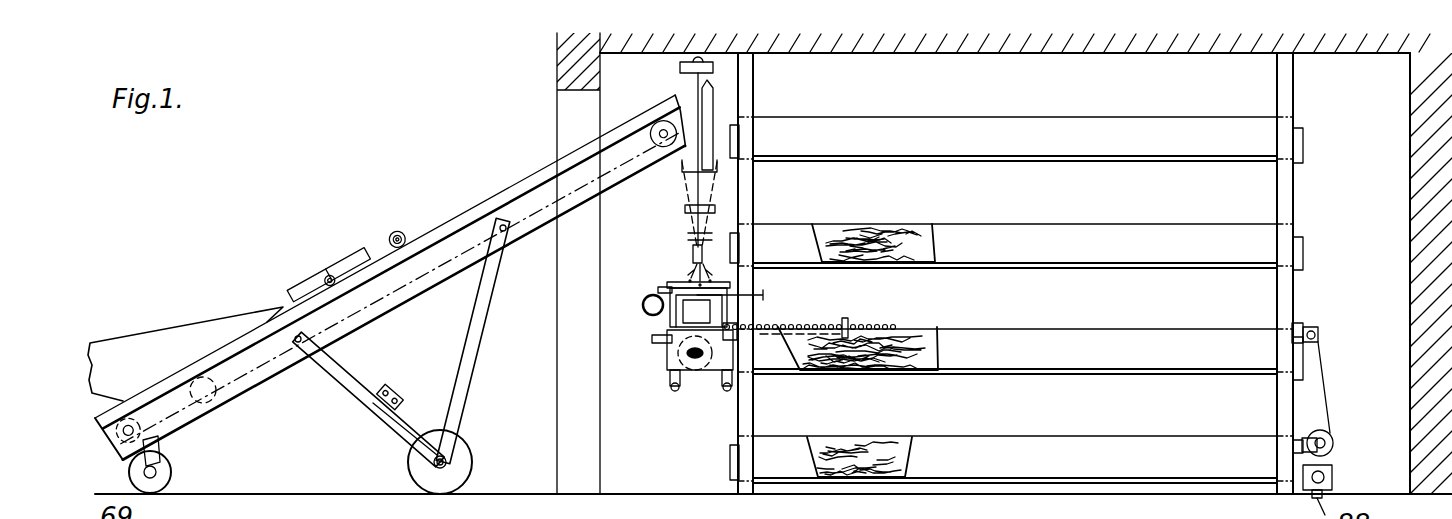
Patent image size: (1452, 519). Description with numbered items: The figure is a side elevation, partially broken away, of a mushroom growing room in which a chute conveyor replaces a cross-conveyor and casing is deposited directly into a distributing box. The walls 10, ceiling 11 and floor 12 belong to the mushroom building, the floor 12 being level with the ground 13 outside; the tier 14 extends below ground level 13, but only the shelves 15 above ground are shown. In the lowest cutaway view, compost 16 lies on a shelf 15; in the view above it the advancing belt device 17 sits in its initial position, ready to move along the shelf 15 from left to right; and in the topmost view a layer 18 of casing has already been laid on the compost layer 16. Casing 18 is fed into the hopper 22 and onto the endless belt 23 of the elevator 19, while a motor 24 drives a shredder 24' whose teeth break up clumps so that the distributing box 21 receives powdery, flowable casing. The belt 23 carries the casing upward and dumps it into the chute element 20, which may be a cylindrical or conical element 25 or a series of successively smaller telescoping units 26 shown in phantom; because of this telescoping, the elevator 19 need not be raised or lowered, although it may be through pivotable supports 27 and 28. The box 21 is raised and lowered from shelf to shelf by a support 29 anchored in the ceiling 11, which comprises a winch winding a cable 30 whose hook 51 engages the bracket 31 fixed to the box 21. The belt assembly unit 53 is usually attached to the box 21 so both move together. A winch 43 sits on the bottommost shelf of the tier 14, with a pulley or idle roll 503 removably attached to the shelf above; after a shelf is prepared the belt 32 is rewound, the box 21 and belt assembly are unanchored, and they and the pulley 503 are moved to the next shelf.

The walls 10 is at (570, 332).
The ceiling 11 is at (917, 53).
The floor 12 is at (665, 494).
The ground 13 is at (476, 494).
The tier 14 is at (730, 417).
The shelves 15 is at (772, 430).
The compost 16 is at (935, 250).
The advancing belt device 17 is at (857, 282).
The layer of casing 18 is at (890, 235).
The elevator 19 is at (470, 203).
The chute element 20 is at (676, 200).
The distributing box 21 is at (640, 322).
The hopper 22 is at (185, 350).
The endless belt 23 is at (216, 400).
The motor 24 is at (370, 229).
The shredder 24' is at (309, 264).
The cylindrical or conical element 25 is at (675, 95).
The telescoping units 26 is at (685, 233).
The pivotable support 27 is at (358, 392).
The pivotable support 28 is at (458, 403).
The support 29 is at (680, 68).
The cable 30 is at (703, 107).
The bracket 31 is at (697, 273).
The belt 32 is at (820, 325).
The winch 43 is at (1327, 435).
The hook 51 is at (697, 265).
The belt assembly unit 53 is at (660, 365).
The pulley or idle roll 503 is at (1313, 330).